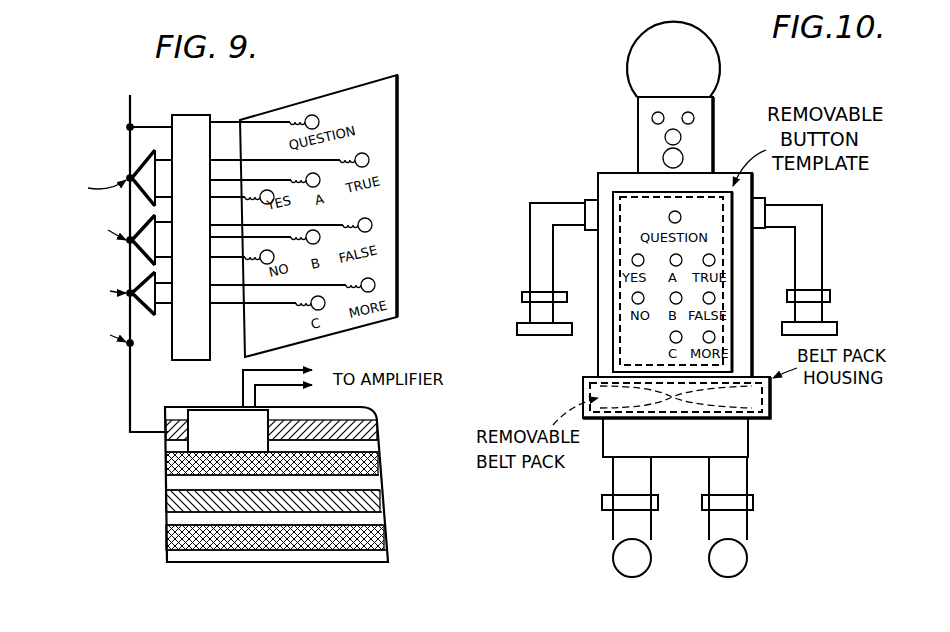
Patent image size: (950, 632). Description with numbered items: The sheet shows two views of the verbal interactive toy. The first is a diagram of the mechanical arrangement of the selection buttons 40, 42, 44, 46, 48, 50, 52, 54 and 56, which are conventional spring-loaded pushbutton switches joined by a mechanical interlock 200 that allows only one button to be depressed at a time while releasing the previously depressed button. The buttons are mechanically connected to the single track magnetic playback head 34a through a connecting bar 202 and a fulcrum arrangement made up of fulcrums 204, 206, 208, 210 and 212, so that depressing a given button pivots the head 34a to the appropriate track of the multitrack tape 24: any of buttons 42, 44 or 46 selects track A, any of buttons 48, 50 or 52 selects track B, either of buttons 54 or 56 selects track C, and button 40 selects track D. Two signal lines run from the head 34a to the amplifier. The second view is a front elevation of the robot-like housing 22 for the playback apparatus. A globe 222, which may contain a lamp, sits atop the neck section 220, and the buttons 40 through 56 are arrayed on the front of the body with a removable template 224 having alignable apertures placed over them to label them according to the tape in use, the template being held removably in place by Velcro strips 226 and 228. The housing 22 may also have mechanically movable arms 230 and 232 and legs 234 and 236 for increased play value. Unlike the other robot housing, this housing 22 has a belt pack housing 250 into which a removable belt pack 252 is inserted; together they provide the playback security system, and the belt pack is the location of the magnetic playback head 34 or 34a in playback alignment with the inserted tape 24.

In FIG. 10, the robot-like housing 22 is at (604, 180).
In FIG. 9, the multitrack tape 24 is at (388, 520).
In FIG. 10, the multitrack head 34 is at (628, 422).
In FIG. 9, the single track magnetic playback head 34a is at (215, 408).
In FIG. 9, the question button 40 is at (320, 118).
In FIG. 10, the question button 40 is at (681, 217).
In FIG. 9, the choice A button 42 is at (320, 174).
In FIG. 10, the choice A button 42 is at (682, 257).
In FIG. 9, the yes button 44 is at (266, 190).
In FIG. 10, the yes button 44 is at (636, 254).
In FIG. 9, the true button 46 is at (369, 160).
In FIG. 10, the true button 46 is at (715, 262).
In FIG. 9, the choice B button 48 is at (320, 232).
In FIG. 10, the choice B button 48 is at (670, 297).
In FIG. 9, the false button 50 is at (372, 227).
In FIG. 10, the false button 50 is at (715, 300).
In FIG. 9, the no button 52 is at (274, 257).
In FIG. 10, the no button 52 is at (632, 296).
In FIG. 9, the choice C button 54 is at (311, 308).
In FIG. 10, the choice C button 54 is at (670, 338).
In FIG. 9, the more button 56 is at (375, 285).
In FIG. 10, the more button 56 is at (715, 336).
In FIG. 9, the mechanical interlock 200 is at (200, 115).
In FIG. 9, the mechanical connecting bar 202 is at (130, 388).
In FIG. 9, the fulcrum 204 is at (130, 346).
In FIG. 9, the fulcrum 206 is at (130, 297).
In FIG. 9, the fulcrum 208 is at (128, 243).
In FIG. 9, the fulcrum 210 is at (130, 176).
In FIG. 9, the fulcrum 212 is at (130, 120).
In FIG. 10, the neck section 220 is at (714, 112).
In FIG. 10, the globe 222 is at (715, 60).
In FIG. 10, the removable template 224 is at (735, 357).
In FIG. 10, the Velcro strip 226 is at (637, 193).
In FIG. 10, the Velcro strip 228 is at (620, 364).
In FIG. 10, the arm 230 is at (530, 222).
In FIG. 10, the arm 232 is at (823, 210).
In FIG. 10, the leg 234 is at (614, 518).
In FIG. 10, the leg 236 is at (736, 518).
In FIG. 10, the belt pack housing 250 is at (770, 398).
In FIG. 10, the removable belt pack 252 is at (755, 420).